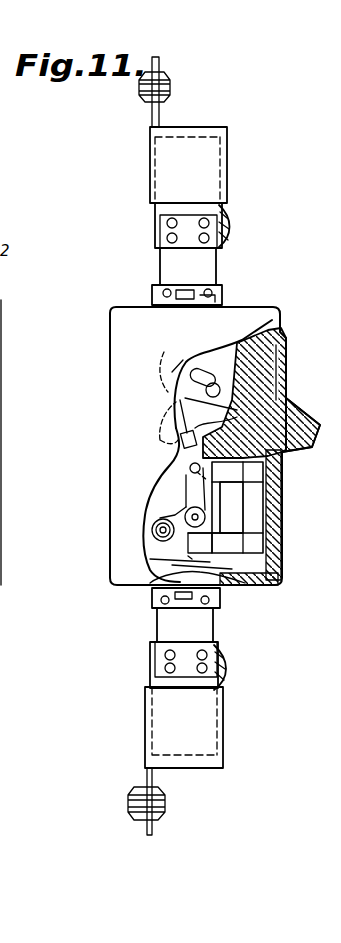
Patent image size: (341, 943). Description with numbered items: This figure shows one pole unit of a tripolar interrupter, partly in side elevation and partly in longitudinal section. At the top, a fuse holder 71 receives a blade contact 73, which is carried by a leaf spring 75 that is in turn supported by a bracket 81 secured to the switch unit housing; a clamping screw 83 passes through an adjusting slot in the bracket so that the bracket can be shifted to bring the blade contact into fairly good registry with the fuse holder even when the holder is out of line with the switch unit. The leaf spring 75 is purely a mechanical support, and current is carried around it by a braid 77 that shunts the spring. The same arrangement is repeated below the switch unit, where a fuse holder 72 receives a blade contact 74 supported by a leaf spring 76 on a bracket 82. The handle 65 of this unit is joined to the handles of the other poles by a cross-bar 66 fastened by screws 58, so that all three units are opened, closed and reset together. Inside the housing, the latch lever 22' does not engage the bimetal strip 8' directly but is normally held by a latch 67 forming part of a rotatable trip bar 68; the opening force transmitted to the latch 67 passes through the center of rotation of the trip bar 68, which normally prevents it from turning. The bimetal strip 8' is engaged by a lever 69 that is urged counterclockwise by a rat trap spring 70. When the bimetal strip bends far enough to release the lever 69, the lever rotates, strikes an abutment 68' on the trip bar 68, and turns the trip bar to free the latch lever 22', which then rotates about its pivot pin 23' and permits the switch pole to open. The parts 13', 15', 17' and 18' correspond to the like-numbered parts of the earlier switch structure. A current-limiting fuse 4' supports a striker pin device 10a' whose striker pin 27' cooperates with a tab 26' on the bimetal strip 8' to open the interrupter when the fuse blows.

The fuse holder 71 is at (170, 148).
The blade contact 73 is at (198, 158).
The braid 77 is at (226, 230).
The leaf spring 75 is at (166, 265).
The clamping screw 83 is at (158, 291).
The bracket 81 is at (222, 300).
The bimetal strip 8' is at (198, 463).
The handle 65 is at (265, 370).
The cross-bar 66 is at (302, 418).
The screw 58 is at (276, 453).
The striker pin 27' is at (266, 567).
The tab 26' is at (230, 586).
The current-limiting fuse 4' is at (250, 507).
The latch 67 is at (207, 521).
The striker pin device 10a' is at (266, 523).
The part corresponding to part 15 15' is at (210, 376).
The part corresponding to part 13 13' is at (205, 356).
The part corresponding to part 17 17' is at (154, 372).
The part corresponding to part 18 18' is at (150, 416).
The latch lever 22' is at (179, 445).
The pivot pin 23' is at (137, 480).
The rotatable trip bar 68 is at (164, 505).
The abutment 68' is at (128, 516).
The lever 69 is at (160, 534).
The rat trap spring 70 is at (180, 543).
The bracket 82 is at (222, 596).
The leaf spring 76 is at (204, 622).
The fuse holder 72 is at (203, 744).
The blade contact 74 is at (195, 757).